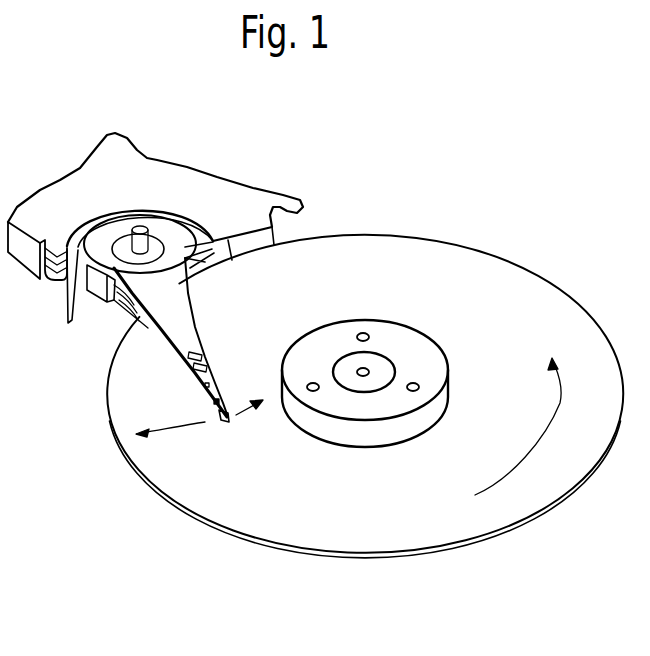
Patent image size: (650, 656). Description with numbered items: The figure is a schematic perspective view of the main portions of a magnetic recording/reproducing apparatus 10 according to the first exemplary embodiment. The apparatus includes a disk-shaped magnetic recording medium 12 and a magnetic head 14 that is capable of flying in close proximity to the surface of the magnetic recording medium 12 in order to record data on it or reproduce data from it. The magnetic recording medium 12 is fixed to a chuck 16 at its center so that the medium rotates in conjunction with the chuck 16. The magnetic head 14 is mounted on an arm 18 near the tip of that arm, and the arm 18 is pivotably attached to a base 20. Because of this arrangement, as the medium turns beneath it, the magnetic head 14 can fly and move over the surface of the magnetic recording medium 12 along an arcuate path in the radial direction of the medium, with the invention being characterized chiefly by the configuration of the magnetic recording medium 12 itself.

The magnetic recording/reproducing apparatus 10 is at (420, 204).
The magnetic recording medium 12 is at (496, 271).
The magnetic head 14 is at (226, 421).
The chuck 16 is at (358, 440).
The arm 18 is at (198, 378).
The base 20 is at (182, 199).